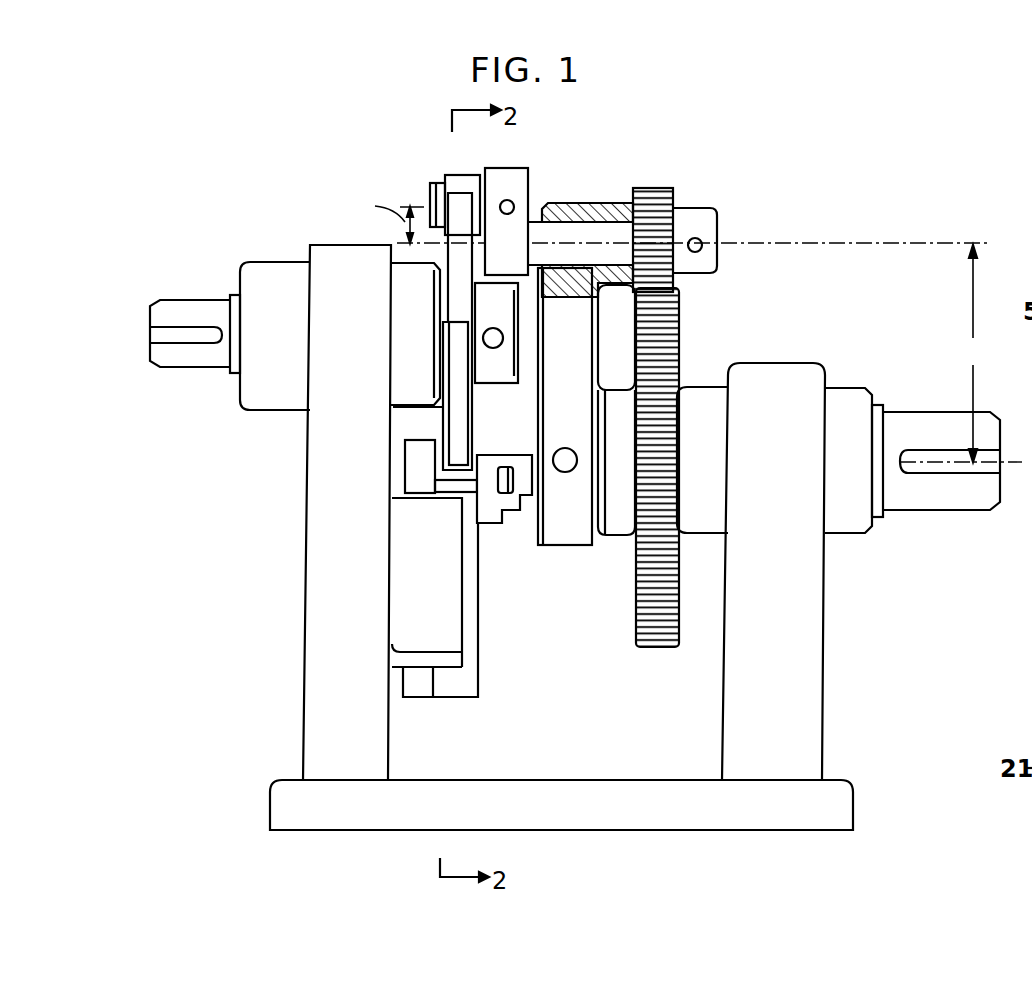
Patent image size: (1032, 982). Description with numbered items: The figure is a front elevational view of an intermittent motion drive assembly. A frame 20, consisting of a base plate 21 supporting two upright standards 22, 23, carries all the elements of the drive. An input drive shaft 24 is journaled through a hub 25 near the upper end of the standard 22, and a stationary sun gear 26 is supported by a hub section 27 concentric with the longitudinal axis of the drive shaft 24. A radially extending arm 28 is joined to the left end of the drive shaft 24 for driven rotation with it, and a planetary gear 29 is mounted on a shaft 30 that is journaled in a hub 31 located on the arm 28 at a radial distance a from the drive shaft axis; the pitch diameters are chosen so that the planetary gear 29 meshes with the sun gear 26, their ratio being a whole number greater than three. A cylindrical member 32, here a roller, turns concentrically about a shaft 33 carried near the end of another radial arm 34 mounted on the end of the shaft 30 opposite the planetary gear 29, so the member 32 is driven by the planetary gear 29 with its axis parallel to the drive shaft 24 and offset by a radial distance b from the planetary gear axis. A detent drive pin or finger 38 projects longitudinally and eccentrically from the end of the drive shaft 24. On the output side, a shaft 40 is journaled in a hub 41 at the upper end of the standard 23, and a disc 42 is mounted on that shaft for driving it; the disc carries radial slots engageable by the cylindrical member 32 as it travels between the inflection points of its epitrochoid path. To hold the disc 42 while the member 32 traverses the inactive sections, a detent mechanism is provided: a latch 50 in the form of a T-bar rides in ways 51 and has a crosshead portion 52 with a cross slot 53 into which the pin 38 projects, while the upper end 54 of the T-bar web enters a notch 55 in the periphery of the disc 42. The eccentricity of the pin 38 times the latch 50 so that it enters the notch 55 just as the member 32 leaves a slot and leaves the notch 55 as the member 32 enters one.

The frame 20 is at (288, 672).
The base plate 21 is at (325, 820).
The upright standard 22 is at (822, 642).
The upright standard 23 is at (303, 752).
The input drive shaft 24 is at (918, 410).
The hub 25 is at (700, 392).
The stationary sun gear 26 is at (678, 322).
The hub section 27 is at (617, 537).
The radially extending arm 28 is at (562, 537).
The planetary gear 29 is at (667, 192).
The shaft 30 is at (578, 218).
The hub 31 is at (607, 205).
The cylindrical member 32 is at (457, 177).
The shaft 33 is at (430, 200).
The radial arm 34 is at (515, 168).
The detent drive pin 38 is at (525, 495).
The output shaft 40 is at (190, 310).
The hub 41 is at (265, 400).
The disc 42 is at (463, 412).
The latch 50 is at (505, 692).
The ways 51 is at (452, 635).
The crosshead portion 52 is at (488, 465).
The cross slot 53 is at (507, 460).
The upper end of T-bar web 54 is at (453, 485).
The notch 55 is at (460, 328).
The radial distance a is at (973, 353).
The radial distance b is at (391, 218).